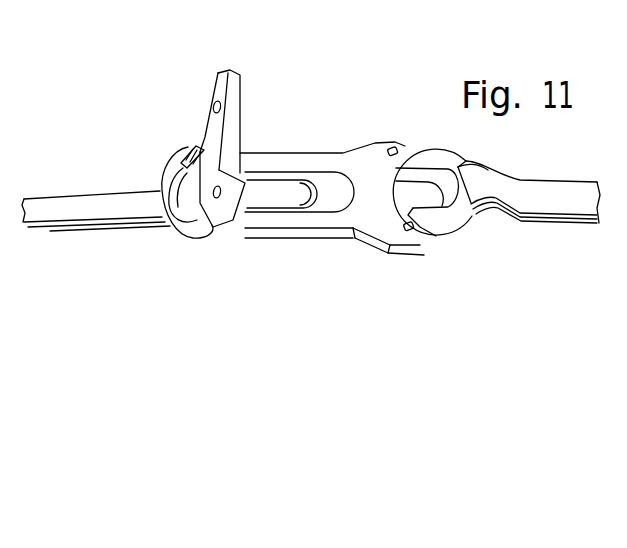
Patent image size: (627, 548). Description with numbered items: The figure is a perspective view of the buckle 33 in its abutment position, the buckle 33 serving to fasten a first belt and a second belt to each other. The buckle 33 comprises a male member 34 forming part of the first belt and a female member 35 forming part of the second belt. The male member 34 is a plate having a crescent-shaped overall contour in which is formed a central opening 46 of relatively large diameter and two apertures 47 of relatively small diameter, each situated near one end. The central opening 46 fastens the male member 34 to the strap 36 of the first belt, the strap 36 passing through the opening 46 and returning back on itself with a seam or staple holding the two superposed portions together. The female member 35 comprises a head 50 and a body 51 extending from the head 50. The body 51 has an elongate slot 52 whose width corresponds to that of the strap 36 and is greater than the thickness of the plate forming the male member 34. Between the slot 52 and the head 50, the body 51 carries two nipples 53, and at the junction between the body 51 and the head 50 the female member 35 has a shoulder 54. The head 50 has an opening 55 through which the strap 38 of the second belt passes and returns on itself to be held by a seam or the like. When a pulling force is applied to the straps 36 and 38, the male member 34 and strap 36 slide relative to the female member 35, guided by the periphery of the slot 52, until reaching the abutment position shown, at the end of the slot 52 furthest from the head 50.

The buckle 33 is at (91, 74).
The male member 34 is at (212, 125).
The female member 35 is at (273, 106).
The strap 36 is at (82, 212).
The strap 38 is at (577, 208).
The central opening 46 is at (198, 148).
The apertures 47 is at (214, 105).
The head 50 is at (463, 220).
The body 51 is at (377, 220).
The elongate slot 52 is at (287, 200).
The nipples 53 is at (392, 150).
The shoulder 54 is at (427, 221).
The opening 55 is at (460, 170).